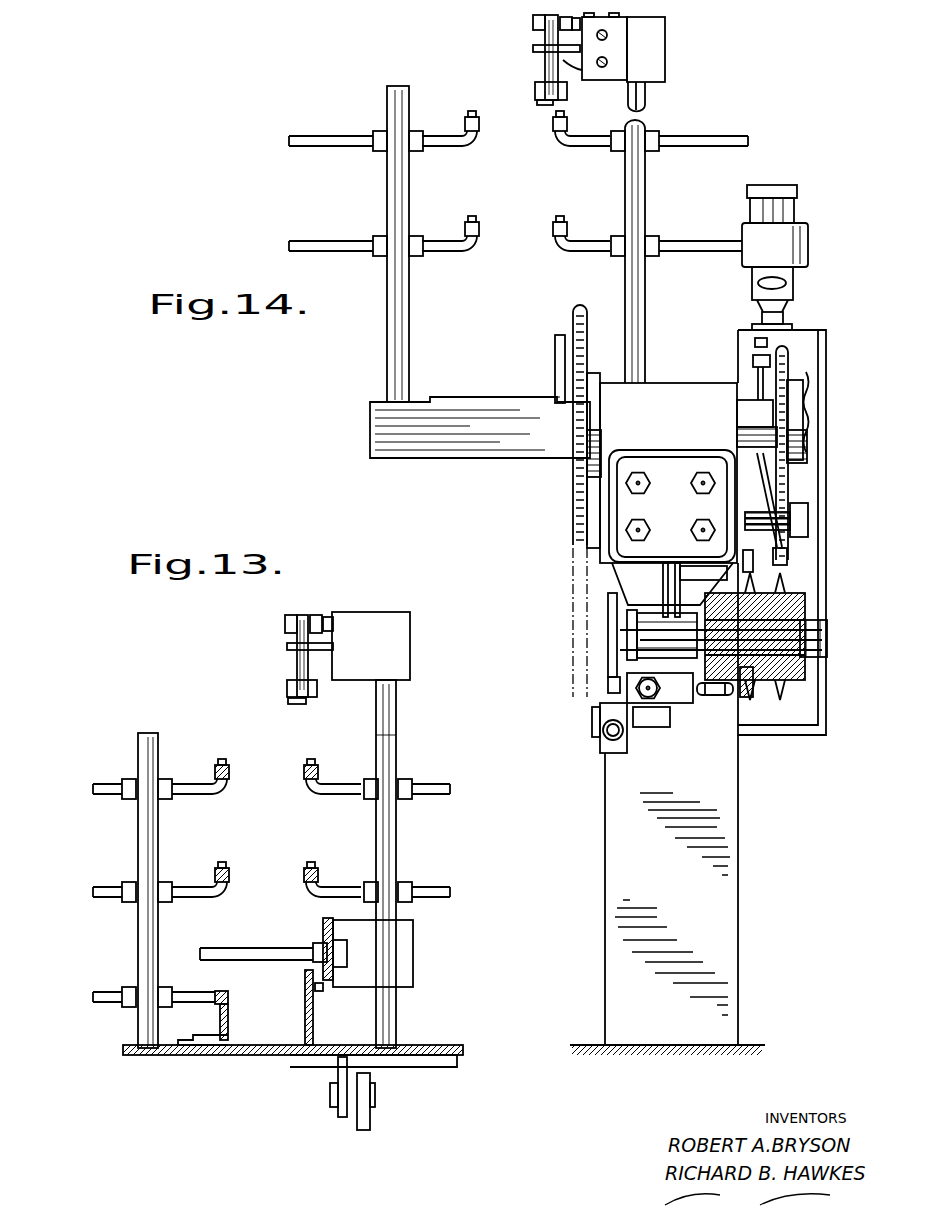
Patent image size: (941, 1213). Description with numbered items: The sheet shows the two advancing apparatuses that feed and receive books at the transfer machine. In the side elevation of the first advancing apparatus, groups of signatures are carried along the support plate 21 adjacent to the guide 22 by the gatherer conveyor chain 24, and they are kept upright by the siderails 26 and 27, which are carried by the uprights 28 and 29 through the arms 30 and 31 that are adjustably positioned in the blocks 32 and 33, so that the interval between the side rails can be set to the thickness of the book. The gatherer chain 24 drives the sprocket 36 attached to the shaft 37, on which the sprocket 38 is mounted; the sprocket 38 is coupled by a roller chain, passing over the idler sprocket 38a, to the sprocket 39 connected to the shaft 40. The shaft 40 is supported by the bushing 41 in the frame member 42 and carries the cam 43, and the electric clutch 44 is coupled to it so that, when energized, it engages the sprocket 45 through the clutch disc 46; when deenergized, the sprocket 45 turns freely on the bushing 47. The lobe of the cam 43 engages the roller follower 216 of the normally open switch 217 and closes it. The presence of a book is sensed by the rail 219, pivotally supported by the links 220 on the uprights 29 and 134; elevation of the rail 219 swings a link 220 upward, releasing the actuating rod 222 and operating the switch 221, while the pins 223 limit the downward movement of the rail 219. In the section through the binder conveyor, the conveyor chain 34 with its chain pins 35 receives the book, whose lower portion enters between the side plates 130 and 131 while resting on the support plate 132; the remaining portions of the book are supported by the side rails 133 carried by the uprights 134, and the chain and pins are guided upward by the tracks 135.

In FIG. 14, the support plate 21 is at (458, 397).
In FIG. 14, the guide 22 is at (558, 350).
In FIG. 14, the conveyor chain 24 is at (580, 573).
In FIG. 14, the siderail 26 is at (480, 125).
In FIG. 14, the siderail 27 is at (556, 135).
In FIG. 14, the upright 28 is at (388, 196).
In FIG. 14, the upright 29 is at (626, 196).
In FIG. 14, the arm 30 is at (459, 147).
In FIG. 14, the arm 31 is at (725, 140).
In FIG. 14, the block 32 is at (380, 134).
In FIG. 14, the block 33 is at (655, 143).
In FIG. 13, the conveyor chain 34 is at (326, 950).
In FIG. 13, the chain pin 35 is at (205, 948).
In FIG. 14, the sprocket 36 is at (578, 497).
In FIG. 14, the shaft 37 is at (748, 400).
In FIG. 14, the sprocket 38 is at (785, 362).
In FIG. 14, the idler sprocket 38a is at (790, 520).
In FIG. 14, the sprocket 39 is at (780, 600).
In FIG. 14, the shaft 40 is at (800, 626).
In FIG. 14, the bushing 41 is at (690, 615).
In FIG. 14, the frame member 42 is at (672, 663).
In FIG. 14, the cam 43 is at (608, 602).
In FIG. 14, the electric clutch 44 is at (720, 682).
In FIG. 14, the sprocket 45 is at (758, 682).
In FIG. 14, the clutch disc 46 is at (733, 690).
In FIG. 14, the bushing 47 is at (762, 600).
In FIG. 13, the side plate 130 is at (228, 1018).
In FIG. 13, the side plate 131 is at (310, 1030).
In FIG. 13, the support plate 132 is at (262, 1050).
In FIG. 13, the side rail 133 is at (230, 773).
In FIG. 13, the upright 134 is at (158, 830).
In FIG. 13, the track 135 is at (330, 925).
In FIG. 14, the roller follower 216 is at (608, 680).
In FIG. 14, the switch 217 is at (596, 708).
In FIG. 14, the rail 219 is at (537, 100).
In FIG. 13, the rail 219 is at (290, 701).
In FIG. 14, the link 220 is at (546, 65).
In FIG. 13, the link 220 is at (298, 664).
In FIG. 14, the switch 221 is at (615, 52).
In FIG. 14, the actuating rod 222 is at (563, 62).
In FIG. 14, the pin 223 is at (538, 47).
In FIG. 13, the pin 223 is at (288, 646).